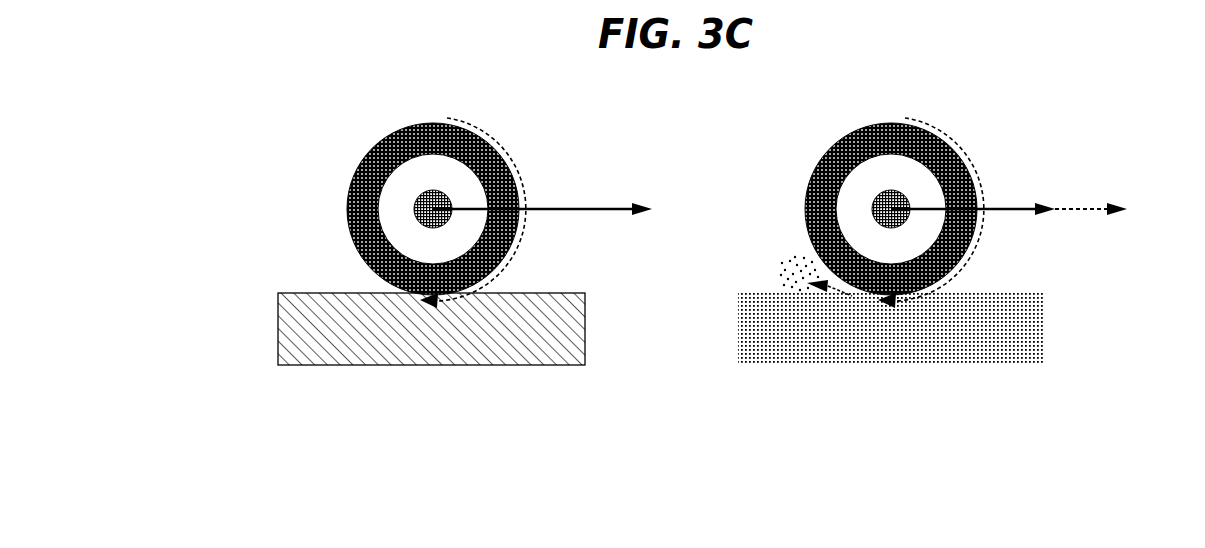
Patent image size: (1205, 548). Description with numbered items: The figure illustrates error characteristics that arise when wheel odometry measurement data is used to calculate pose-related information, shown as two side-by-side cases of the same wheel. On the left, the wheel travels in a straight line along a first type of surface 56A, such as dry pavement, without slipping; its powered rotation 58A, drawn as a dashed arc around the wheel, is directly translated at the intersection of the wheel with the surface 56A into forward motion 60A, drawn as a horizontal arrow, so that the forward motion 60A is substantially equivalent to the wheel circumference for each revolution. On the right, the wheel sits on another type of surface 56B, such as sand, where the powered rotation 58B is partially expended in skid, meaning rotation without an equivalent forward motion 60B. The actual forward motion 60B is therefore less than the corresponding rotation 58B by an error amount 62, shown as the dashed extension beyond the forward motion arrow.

The first type of surface 56A is at (524, 294).
The another type of surface 56B is at (983, 294).
The powered rotation 58A is at (490, 137).
The powered rotation 58B is at (949, 137).
The forward motion 60A is at (553, 207).
The forward motion 60B is at (1012, 207).
The error amount 62 is at (1095, 207).